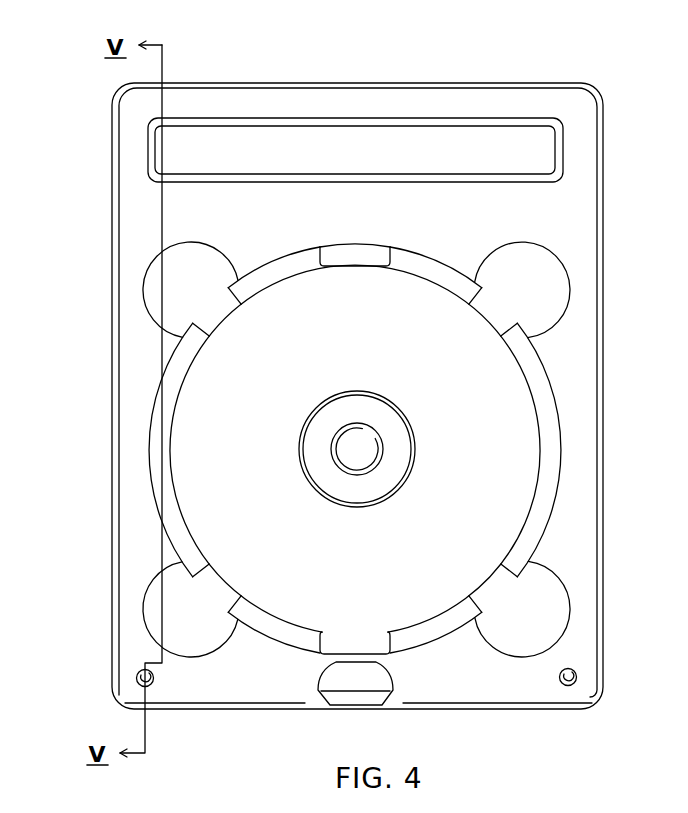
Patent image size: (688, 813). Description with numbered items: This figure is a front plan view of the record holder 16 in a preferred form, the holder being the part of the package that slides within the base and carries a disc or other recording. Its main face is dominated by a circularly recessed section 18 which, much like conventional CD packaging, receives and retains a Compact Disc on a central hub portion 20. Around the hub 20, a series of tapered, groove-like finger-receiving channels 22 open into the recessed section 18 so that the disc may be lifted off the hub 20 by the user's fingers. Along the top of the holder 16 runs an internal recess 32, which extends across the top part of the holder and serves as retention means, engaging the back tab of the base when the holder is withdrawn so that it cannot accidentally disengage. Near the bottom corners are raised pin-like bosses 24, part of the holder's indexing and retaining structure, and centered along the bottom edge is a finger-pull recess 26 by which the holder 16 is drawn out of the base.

The holder 16 is at (568, 100).
The circularly recessed section 18 is at (513, 418).
The central hub portion 20 is at (352, 457).
The finger-receiving channels 22 is at (555, 290).
The raised pin-like bosses 24 is at (137, 679).
The finger-pull recess 26 is at (345, 698).
The internal recess 32 is at (260, 145).